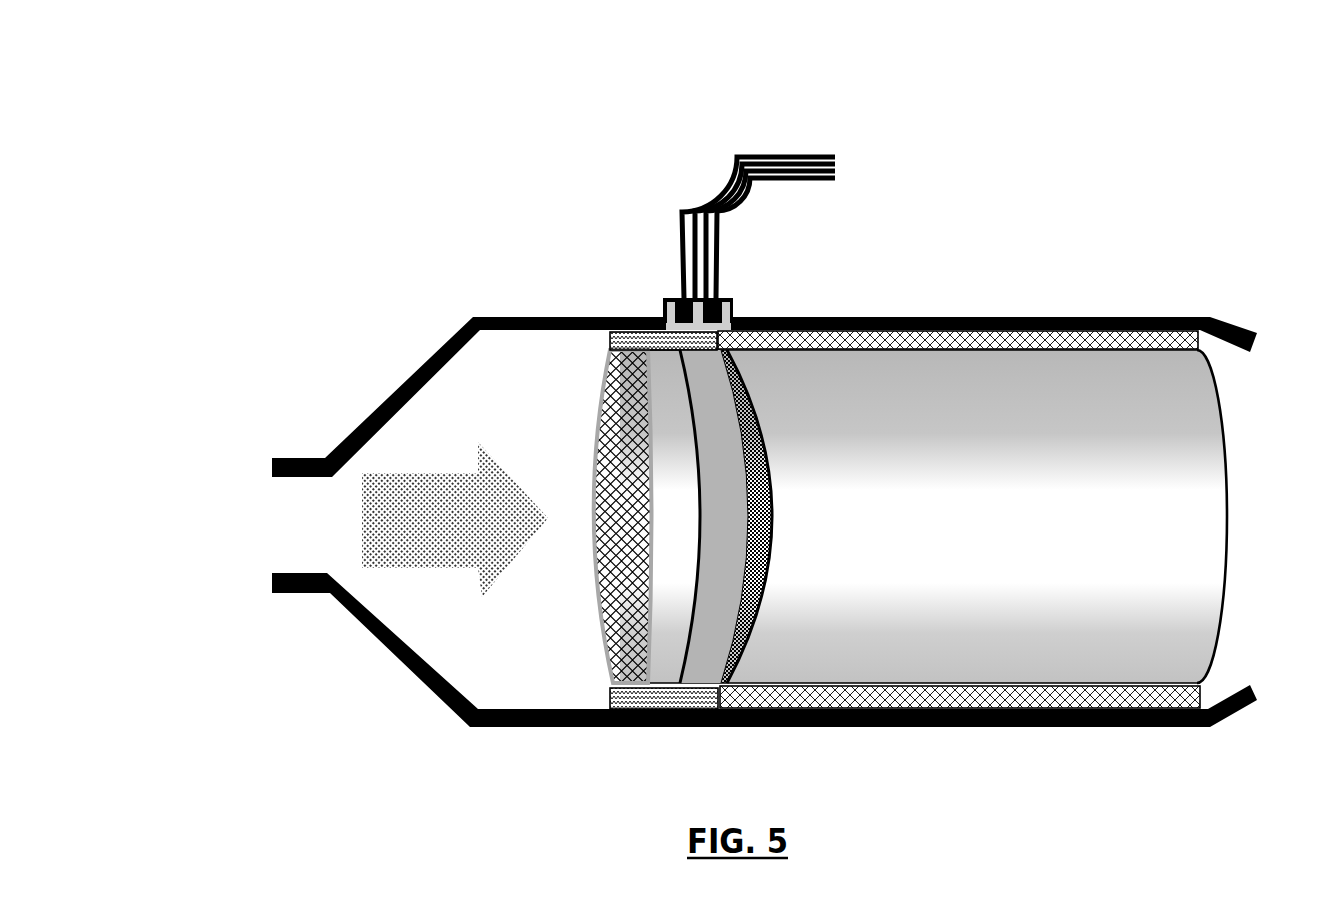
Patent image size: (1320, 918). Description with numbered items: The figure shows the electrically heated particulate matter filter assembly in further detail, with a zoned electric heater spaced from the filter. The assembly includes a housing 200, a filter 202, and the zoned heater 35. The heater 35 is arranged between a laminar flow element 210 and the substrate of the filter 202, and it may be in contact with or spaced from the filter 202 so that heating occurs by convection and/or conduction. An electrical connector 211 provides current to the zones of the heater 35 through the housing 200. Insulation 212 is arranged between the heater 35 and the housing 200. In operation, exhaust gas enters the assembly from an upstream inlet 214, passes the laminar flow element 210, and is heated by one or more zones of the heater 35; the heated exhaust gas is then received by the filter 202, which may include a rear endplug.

The housing 200 is at (943, 317).
The filter 202 is at (868, 507).
The zoned heater 35 is at (618, 473).
The laminar flow element 210 is at (638, 317).
The electrical connector 211 is at (955, 155).
The insulation 212 is at (610, 343).
The upstream inlet 214 is at (275, 527).